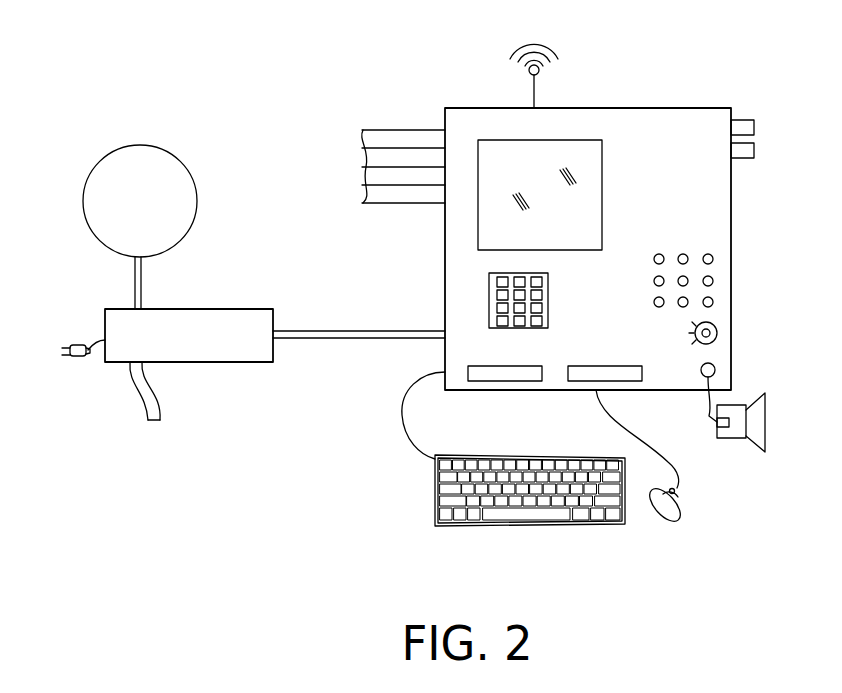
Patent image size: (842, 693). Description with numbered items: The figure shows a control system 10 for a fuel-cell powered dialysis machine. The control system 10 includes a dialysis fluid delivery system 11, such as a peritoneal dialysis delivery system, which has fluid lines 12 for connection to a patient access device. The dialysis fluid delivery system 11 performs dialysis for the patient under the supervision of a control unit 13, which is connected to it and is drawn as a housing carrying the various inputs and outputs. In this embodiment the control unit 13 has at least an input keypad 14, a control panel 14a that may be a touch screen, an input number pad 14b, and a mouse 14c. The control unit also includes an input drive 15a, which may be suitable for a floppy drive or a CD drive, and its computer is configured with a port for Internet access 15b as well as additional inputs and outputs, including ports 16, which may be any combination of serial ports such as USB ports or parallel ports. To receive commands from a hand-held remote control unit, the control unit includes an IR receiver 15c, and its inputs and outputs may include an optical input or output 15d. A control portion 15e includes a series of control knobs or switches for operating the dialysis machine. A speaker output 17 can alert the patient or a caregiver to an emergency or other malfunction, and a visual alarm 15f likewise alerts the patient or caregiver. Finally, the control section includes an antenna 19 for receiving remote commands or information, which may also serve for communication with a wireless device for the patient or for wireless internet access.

The control system 10 is at (213, 94).
The dialysis fluid delivery system 11 is at (212, 310).
The fluid lines 12 is at (161, 402).
The control unit 13 is at (445, 352).
The input keypad 14 is at (497, 527).
The control panel 14a is at (478, 238).
The input number pad 14b is at (489, 296).
The mouse 14c is at (676, 511).
The input drive 15a is at (499, 382).
The port for Internet access 15b is at (370, 204).
The IR receiver 15c is at (625, 390).
The optical input or output 15d is at (752, 120).
The control portion 15e is at (708, 293).
The visual alarm 15f is at (718, 333).
The ports 16 is at (394, 99).
The speaker output 17 is at (737, 440).
The antenna 19 is at (537, 88).